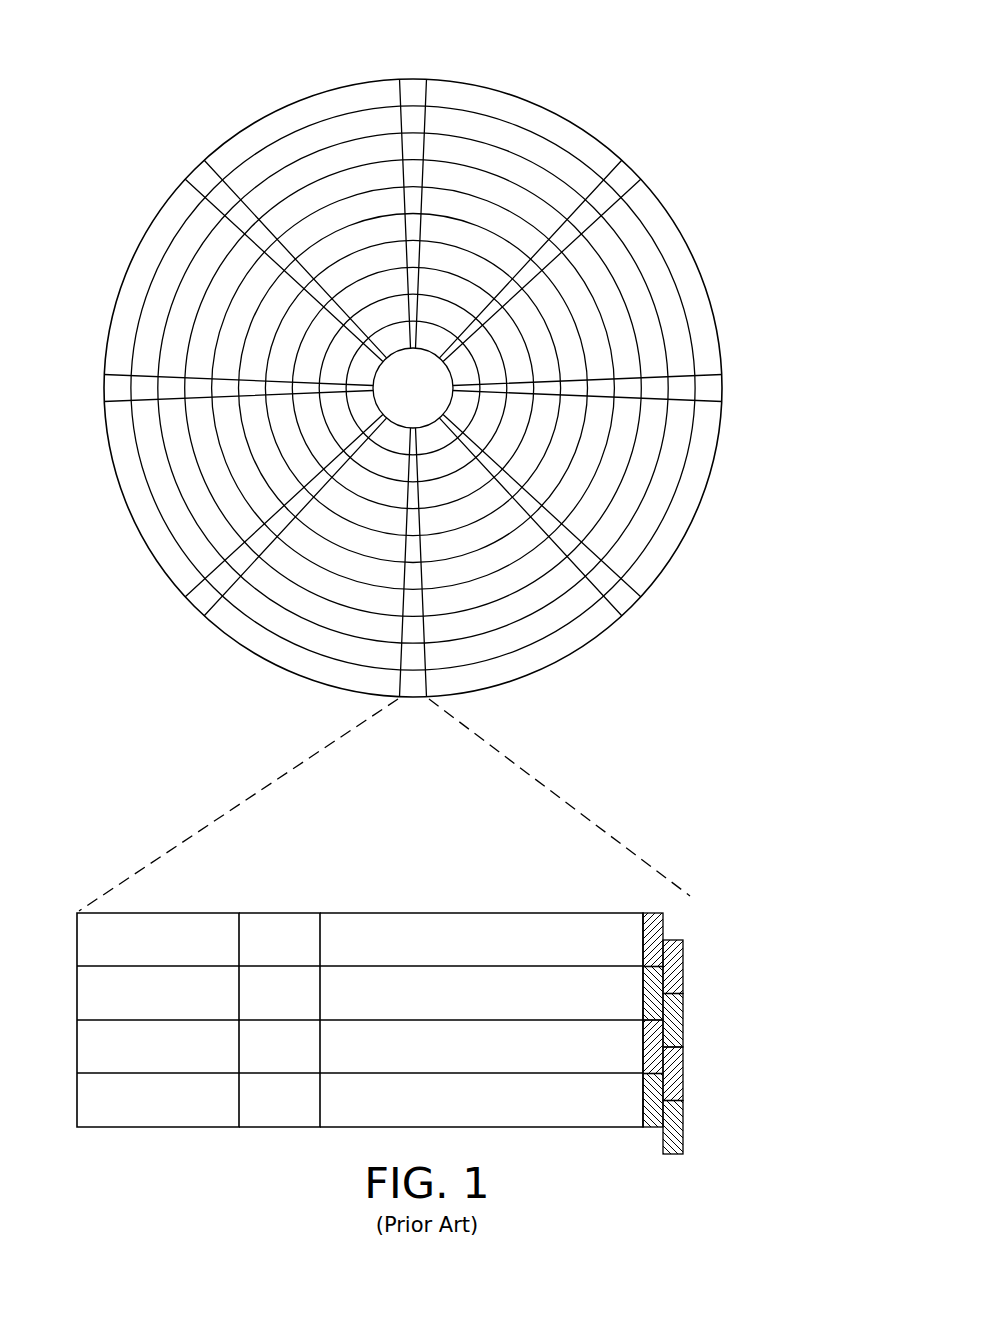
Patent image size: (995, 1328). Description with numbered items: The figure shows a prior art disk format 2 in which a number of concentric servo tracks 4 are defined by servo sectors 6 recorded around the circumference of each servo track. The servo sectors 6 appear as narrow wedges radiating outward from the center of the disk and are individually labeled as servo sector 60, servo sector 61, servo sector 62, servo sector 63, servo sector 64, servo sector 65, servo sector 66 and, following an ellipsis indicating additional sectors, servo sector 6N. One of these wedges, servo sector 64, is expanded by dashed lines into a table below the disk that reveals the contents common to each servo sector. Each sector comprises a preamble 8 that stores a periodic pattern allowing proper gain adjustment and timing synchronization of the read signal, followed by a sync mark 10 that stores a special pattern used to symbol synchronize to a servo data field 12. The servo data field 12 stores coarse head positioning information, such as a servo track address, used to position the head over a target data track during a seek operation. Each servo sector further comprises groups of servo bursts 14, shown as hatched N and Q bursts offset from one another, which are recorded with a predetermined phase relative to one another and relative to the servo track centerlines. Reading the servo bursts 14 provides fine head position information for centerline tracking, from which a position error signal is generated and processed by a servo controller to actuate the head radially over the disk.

The disk format 2 is at (186, 83).
The servo tracks 4 is at (540, 124).
The servo sectors 6 is at (414, 396).
The servo sector 6_0 60 is at (413, 86).
The servo sector 6_1 61 is at (636, 170).
The servo sector 6_2 62 is at (716, 388).
The servo sector 6_3 63 is at (628, 606).
The servo sector 6_4 64 is at (278, 770).
The servo sector 6_5 65 is at (198, 606).
The servo sector 6_6 66 is at (110, 388).
The servo sector 6_N 6N is at (200, 172).
The preamble 8 is at (167, 912).
The sync mark 10 is at (284, 912).
The servo data field 12 is at (472, 912).
The servo bursts 14 is at (677, 910).